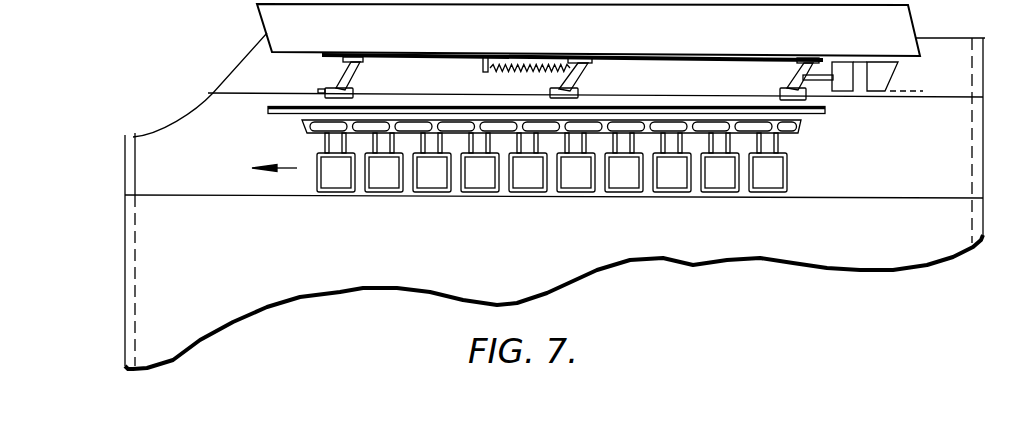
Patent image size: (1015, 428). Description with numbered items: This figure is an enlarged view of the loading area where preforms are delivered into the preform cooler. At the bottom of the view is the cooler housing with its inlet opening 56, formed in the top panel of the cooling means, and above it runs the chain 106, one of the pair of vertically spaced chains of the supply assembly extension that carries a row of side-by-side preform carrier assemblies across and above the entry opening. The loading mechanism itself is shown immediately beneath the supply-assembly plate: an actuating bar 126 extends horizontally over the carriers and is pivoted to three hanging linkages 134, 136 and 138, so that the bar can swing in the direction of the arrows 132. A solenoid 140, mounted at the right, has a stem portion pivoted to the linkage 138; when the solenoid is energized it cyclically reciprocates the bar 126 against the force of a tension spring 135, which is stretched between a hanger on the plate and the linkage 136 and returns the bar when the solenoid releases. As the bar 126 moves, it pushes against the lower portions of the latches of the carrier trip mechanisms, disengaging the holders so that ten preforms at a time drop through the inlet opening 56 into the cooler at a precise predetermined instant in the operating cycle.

The inlet opening 56 is at (148, 172).
The chain 106 is at (798, 132).
The actuating bar 126 is at (716, 93).
The arrows 132 is at (331, 77).
The linkage 134 is at (373, 76).
The tension spring 135 is at (502, 71).
The linkage 136 is at (592, 67).
The linkage 138 is at (793, 81).
The solenoid 140 is at (876, 80).